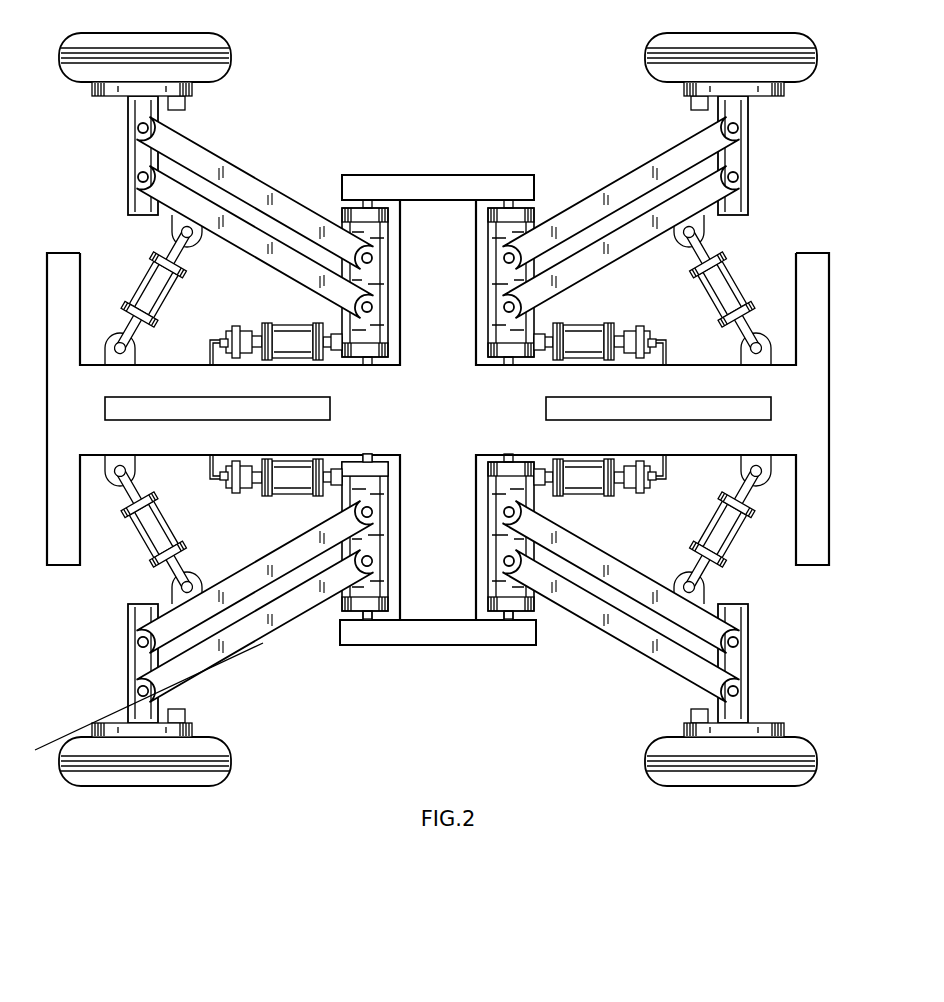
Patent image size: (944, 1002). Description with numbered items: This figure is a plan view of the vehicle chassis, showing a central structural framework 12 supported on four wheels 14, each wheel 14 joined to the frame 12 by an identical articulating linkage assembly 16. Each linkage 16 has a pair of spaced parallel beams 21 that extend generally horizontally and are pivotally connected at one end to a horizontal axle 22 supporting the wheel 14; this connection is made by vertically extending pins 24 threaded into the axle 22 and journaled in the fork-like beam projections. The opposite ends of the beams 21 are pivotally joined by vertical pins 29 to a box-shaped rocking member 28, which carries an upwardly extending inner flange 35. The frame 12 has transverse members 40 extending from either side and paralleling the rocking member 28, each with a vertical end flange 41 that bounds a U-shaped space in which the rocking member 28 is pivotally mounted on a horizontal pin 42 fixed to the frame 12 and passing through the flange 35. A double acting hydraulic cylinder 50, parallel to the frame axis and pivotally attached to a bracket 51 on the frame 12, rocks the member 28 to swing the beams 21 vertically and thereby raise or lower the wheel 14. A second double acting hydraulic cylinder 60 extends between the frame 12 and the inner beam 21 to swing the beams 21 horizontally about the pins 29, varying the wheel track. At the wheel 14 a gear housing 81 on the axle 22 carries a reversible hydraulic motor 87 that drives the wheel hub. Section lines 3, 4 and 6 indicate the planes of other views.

The section line 3- 3 is at (22, 728).
The section line 4- 4 is at (337, 431).
The direction of movement / slot 6 is at (130, 415).
The central structural framework 12 is at (816, 406).
The wheel 14 is at (232, 38).
The articulating linkage assembly 16 is at (284, 183).
The beam 21 is at (265, 572).
The axle 22 is at (137, 664).
The pin 24 is at (140, 640).
The rocking member 28 is at (392, 588).
The pin 29 is at (372, 512).
The flange 35 is at (390, 472).
The transverse member 40 is at (452, 605).
The end flange 41 is at (490, 636).
The pin 42 is at (372, 460).
The hydraulic cylinder 50 is at (292, 338).
The bracket 51 is at (212, 479).
The hydraulic cylinder 60 is at (168, 300).
The gear housing 81 is at (100, 722).
The hydraulic motor 87 is at (190, 712).